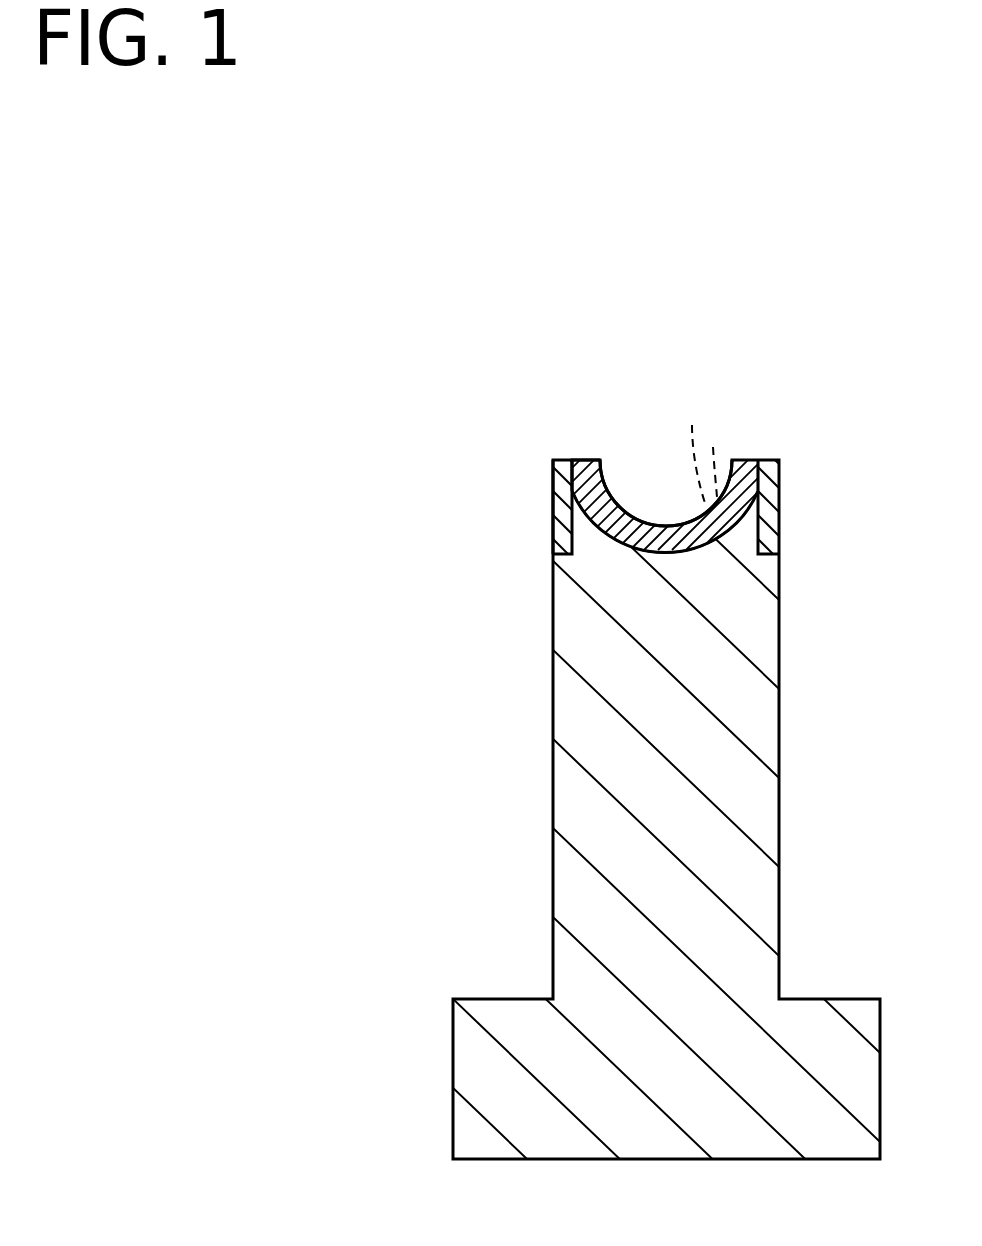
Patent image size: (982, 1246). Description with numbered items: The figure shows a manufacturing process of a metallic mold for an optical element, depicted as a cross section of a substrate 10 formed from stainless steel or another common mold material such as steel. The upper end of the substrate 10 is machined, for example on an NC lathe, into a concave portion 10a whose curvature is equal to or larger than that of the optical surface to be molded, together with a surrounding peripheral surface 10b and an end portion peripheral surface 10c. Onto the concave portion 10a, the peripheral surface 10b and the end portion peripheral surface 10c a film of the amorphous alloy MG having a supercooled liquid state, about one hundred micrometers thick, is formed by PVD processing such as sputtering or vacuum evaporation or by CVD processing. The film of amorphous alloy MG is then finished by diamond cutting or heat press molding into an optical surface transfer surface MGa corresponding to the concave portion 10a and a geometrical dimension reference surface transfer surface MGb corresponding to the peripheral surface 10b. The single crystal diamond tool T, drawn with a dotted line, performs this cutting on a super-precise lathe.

The substrate 10 is at (780, 718).
The concave portion 10a is at (667, 525).
The peripheral surface 10b is at (572, 492).
The end portion peripheral surface 10c is at (553, 523).
The amorphous alloy MG is at (758, 460).
The optical surface transfer surface MGa is at (602, 486).
The geometrical dimension reference surface transfer surface MGb is at (572, 460).
The single crystal diamond tool T is at (712, 438).